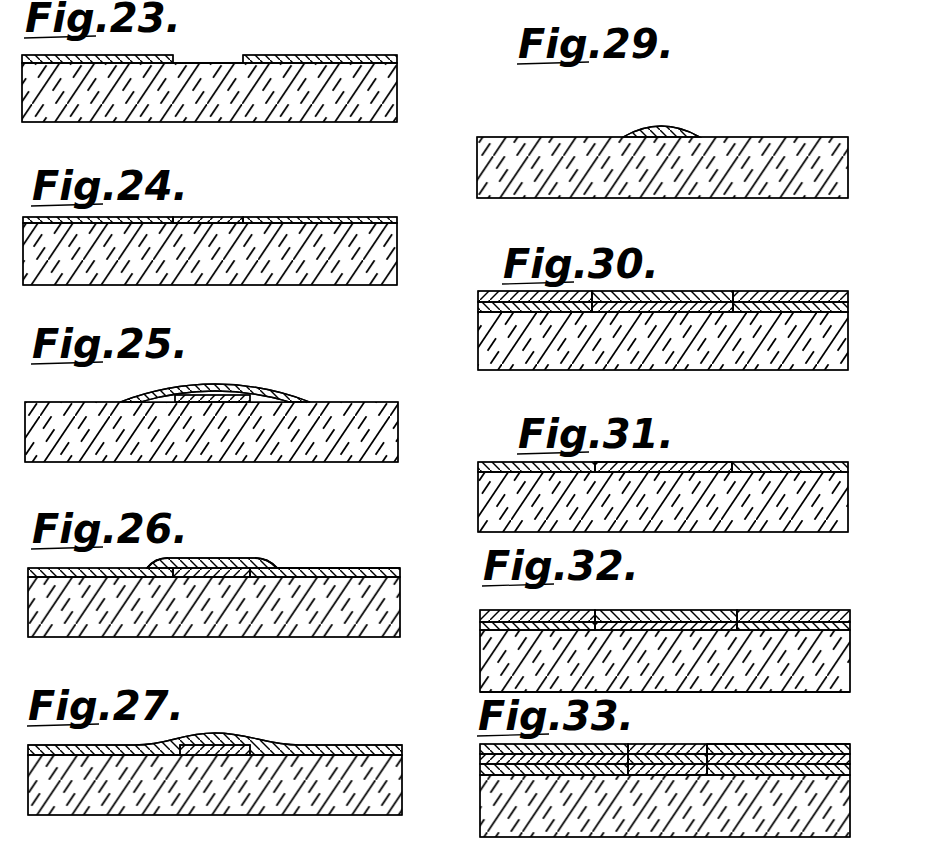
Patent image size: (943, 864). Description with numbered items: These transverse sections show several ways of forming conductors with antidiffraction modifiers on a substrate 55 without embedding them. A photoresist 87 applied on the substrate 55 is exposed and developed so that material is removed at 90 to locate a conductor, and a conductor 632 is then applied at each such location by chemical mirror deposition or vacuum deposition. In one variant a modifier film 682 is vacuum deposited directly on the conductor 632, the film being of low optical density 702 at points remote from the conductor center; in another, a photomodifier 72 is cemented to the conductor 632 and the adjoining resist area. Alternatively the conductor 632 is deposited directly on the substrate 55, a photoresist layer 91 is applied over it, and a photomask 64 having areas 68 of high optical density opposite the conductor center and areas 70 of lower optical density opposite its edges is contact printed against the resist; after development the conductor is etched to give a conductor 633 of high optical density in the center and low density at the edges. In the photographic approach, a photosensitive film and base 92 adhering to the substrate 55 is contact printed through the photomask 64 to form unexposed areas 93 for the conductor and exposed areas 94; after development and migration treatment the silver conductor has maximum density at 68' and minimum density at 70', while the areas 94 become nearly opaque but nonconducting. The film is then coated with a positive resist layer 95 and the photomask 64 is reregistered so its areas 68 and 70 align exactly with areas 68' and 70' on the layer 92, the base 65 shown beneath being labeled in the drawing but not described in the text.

In FIG. 23, the substrate 55 is at (352, 112).
In FIG. 24, the substrate 55 is at (350, 272).
In FIG. 25, the substrate 55 is at (357, 453).
In FIG. 26, the substrate 55 is at (352, 628).
In FIG. 27, the substrate 55 is at (352, 808).
In FIG. 29, the substrate 55 is at (770, 190).
In FIG. 30, the substrate 55 is at (778, 360).
In FIG. 31, the substrate 55 is at (785, 522).
In FIG. 32, the substrate 55 is at (780, 678).
In FIG. 23, the photoresist 87 is at (298, 55).
In FIG. 24, the photoresist 87 is at (305, 216).
In FIG. 26, the photoresist 87 is at (322, 578).
In FIG. 23, the removed area 90 is at (203, 62).
In FIG. 24, the removed area 90 is at (217, 224).
In FIG. 24, the conductor 632 is at (214, 217).
In FIG. 25, the conductor 632 is at (207, 402).
In FIG. 26, the conductor 632 is at (198, 578).
In FIG. 27, the conductor 632 is at (212, 756).
In FIG. 25, the modifier film 682 is at (192, 386).
In FIG. 25, the low optical density portion 702 is at (138, 400).
In FIG. 26, the high optical density areas 68 is at (212, 546).
In FIG. 30, the high optical density areas 68 is at (662, 282).
In FIG. 32, the high optical density areas 68 is at (666, 588).
In FIG. 33, the high optical density areas 68 is at (667, 735).
In FIG. 26, the lower optical density areas 70 is at (239, 542).
In FIG. 30, the lower optical density areas 70 is at (663, 283).
In FIG. 32, the lower optical density areas 70 is at (698, 586).
In FIG. 33, the lower optical density areas 70 is at (680, 732).
In FIG. 26, the photomodifier 72 is at (343, 568).
In FIG. 27, the photoresist layer 91 is at (352, 748).
In FIG. 29, the etched conductor 633 is at (658, 130).
In FIG. 30, the photomask 64 is at (770, 291).
In FIG. 33, the photomask 64 is at (770, 740).
In FIG. 30, the exposed areas 94 is at (482, 306).
In FIG. 31, the exposed areas 94 is at (493, 462).
In FIG. 32, the exposed areas 94 is at (482, 630).
In FIG. 33, the exposed areas 94 is at (830, 777).
In FIG. 30, the unexposed areas 93 is at (658, 312).
In FIG. 31, the unexposed areas 93 is at (677, 462).
In FIG. 32, the unexposed areas 93 is at (692, 620).
In FIG. 30, the photosensitive film and base 92 is at (772, 312).
In FIG. 31, the photosensitive film and base 92 is at (778, 462).
In FIG. 33, the photosensitive film and base 92 is at (757, 775).
In FIG. 31, the maximum optical density area 68' is at (663, 455).
In FIG. 32, the maximum optical density area 68' is at (666, 606).
In FIG. 33, the maximum optical density area 68' is at (667, 793).
In FIG. 31, the minimum optical density area 70' is at (679, 446).
In FIG. 32, the minimum optical density area 70' is at (691, 605).
In FIG. 33, the minimum optical density area 70' is at (659, 783).
In FIG. 32, the positive resist layer 95 is at (548, 612).
In FIG. 33, the positive resist layer 95 is at (798, 745).
In FIG. 32, the base plate 65 is at (670, 683).
In FIG. 33, the base plate 65 is at (775, 836).